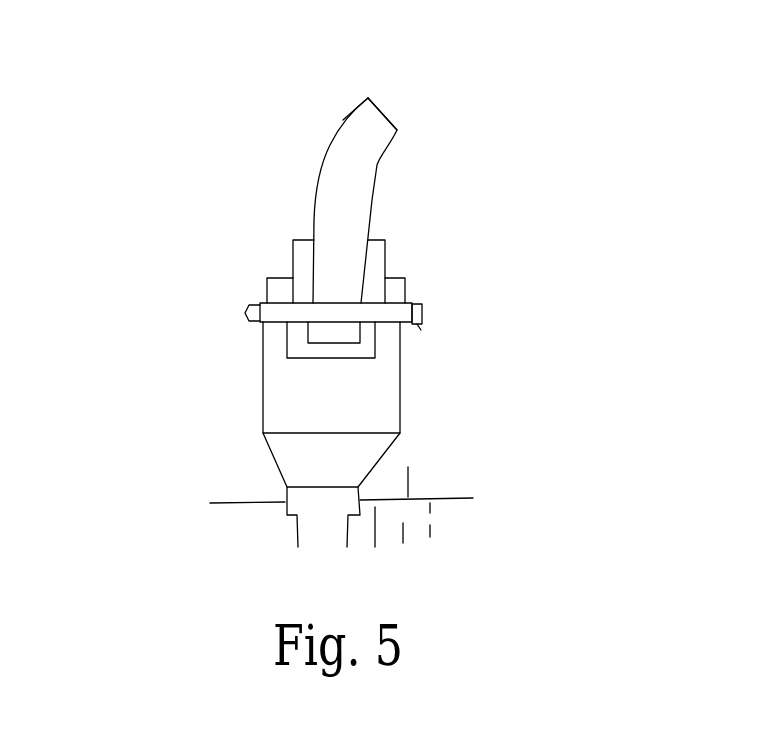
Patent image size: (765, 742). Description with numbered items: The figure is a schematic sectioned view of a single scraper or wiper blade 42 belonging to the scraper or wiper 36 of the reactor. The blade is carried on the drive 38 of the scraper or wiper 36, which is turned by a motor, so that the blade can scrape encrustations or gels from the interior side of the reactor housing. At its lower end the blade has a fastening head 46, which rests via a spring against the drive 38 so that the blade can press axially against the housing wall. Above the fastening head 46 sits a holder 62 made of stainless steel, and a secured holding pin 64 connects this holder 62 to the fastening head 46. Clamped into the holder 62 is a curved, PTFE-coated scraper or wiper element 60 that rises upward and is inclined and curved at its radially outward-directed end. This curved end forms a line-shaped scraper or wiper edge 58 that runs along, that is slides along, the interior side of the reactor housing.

The scraper or wiper 36 is at (158, 390).
The drive 38 is at (417, 517).
The scraper or wiper blade 42 is at (453, 253).
The fastening head 46 is at (377, 403).
The scraper or wiper edge 58 is at (368, 98).
The scraper or wiper element 60 is at (337, 187).
The holder 62 is at (293, 267).
The holding pin 64 is at (407, 305).